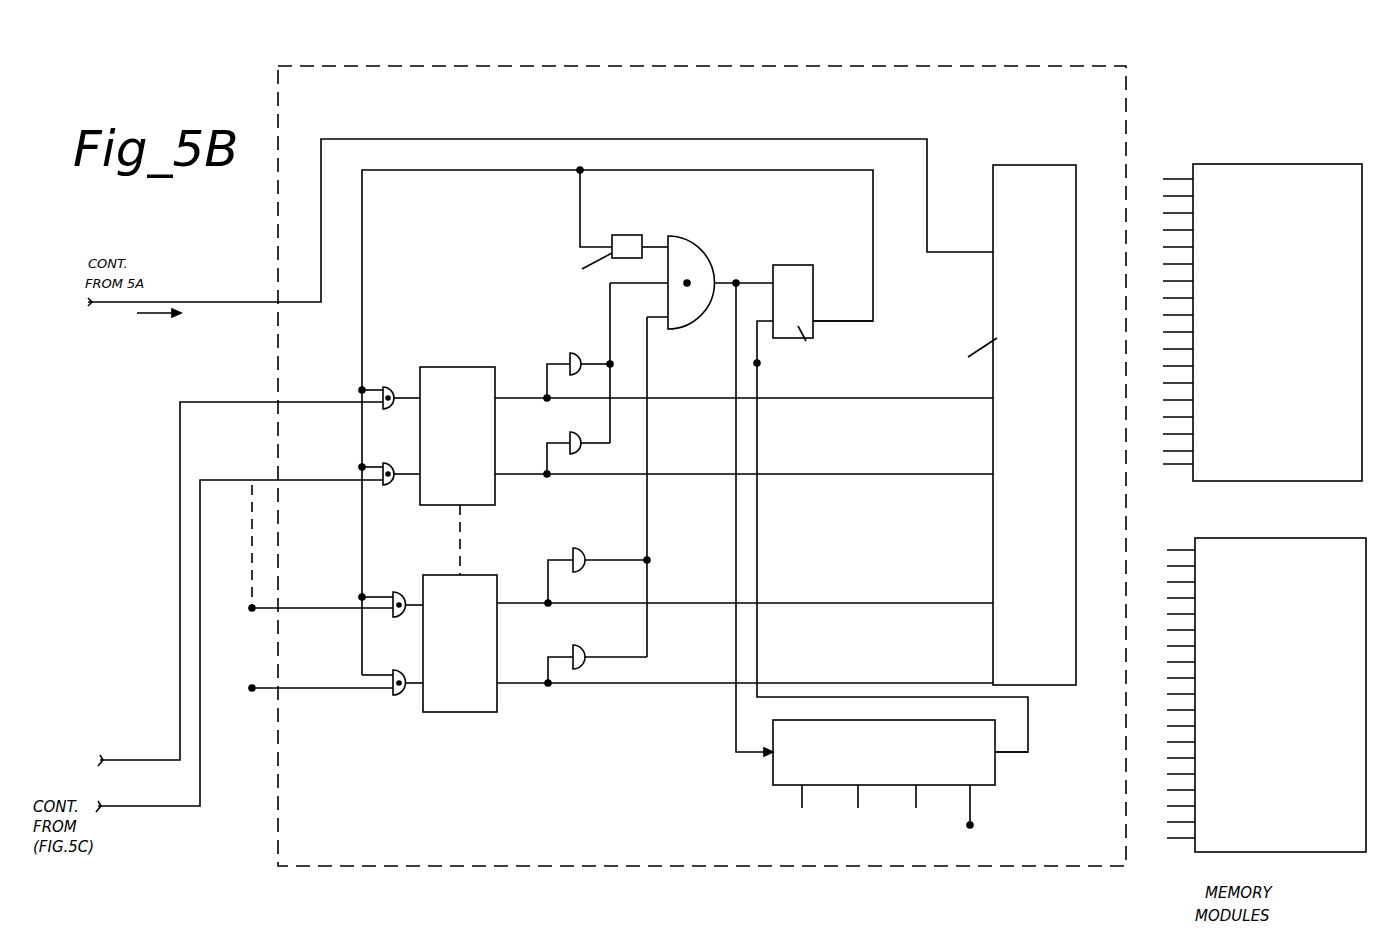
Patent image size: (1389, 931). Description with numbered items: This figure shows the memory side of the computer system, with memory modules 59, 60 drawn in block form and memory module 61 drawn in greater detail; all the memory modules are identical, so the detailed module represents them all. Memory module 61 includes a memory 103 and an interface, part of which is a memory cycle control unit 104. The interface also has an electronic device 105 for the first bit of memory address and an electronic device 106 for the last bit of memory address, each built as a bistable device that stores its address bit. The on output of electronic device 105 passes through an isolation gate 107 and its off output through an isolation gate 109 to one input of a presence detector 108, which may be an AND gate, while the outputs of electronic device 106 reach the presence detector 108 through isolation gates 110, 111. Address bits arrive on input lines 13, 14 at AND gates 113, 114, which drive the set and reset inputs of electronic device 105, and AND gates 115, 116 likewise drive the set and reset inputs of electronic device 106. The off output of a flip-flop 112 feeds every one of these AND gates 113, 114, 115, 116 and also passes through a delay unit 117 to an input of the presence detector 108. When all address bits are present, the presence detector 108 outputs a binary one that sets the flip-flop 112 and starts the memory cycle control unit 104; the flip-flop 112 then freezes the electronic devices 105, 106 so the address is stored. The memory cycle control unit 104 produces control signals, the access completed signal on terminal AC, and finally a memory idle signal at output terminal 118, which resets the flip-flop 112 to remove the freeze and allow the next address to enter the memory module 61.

The memory module 61 is at (1001, 66).
The memory module 60 is at (1262, 322).
The memory module 59 is at (1266, 695).
The memory 103 is at (1030, 165).
The memory cycle control unit 104 is at (770, 780).
The electronic device 105 is at (440, 367).
The electronic device 106 is at (455, 712).
The isolation gate 107 is at (578, 353).
The presence detector 108 is at (695, 242).
The isolation gate 109 is at (580, 453).
The isolation gate 110 is at (581, 548).
The isolation gate 111 is at (583, 645).
The flip-flop 112 is at (797, 265).
The AND gate 113 is at (383, 387).
The AND gate 114 is at (408, 441).
The AND gate 115 is at (401, 592).
The AND gate 116 is at (412, 652).
The delay unit 117 is at (621, 235).
The output terminal 118 is at (1010, 755).
The control line 13 is at (102, 760).
The control line 14 is at (116, 806).